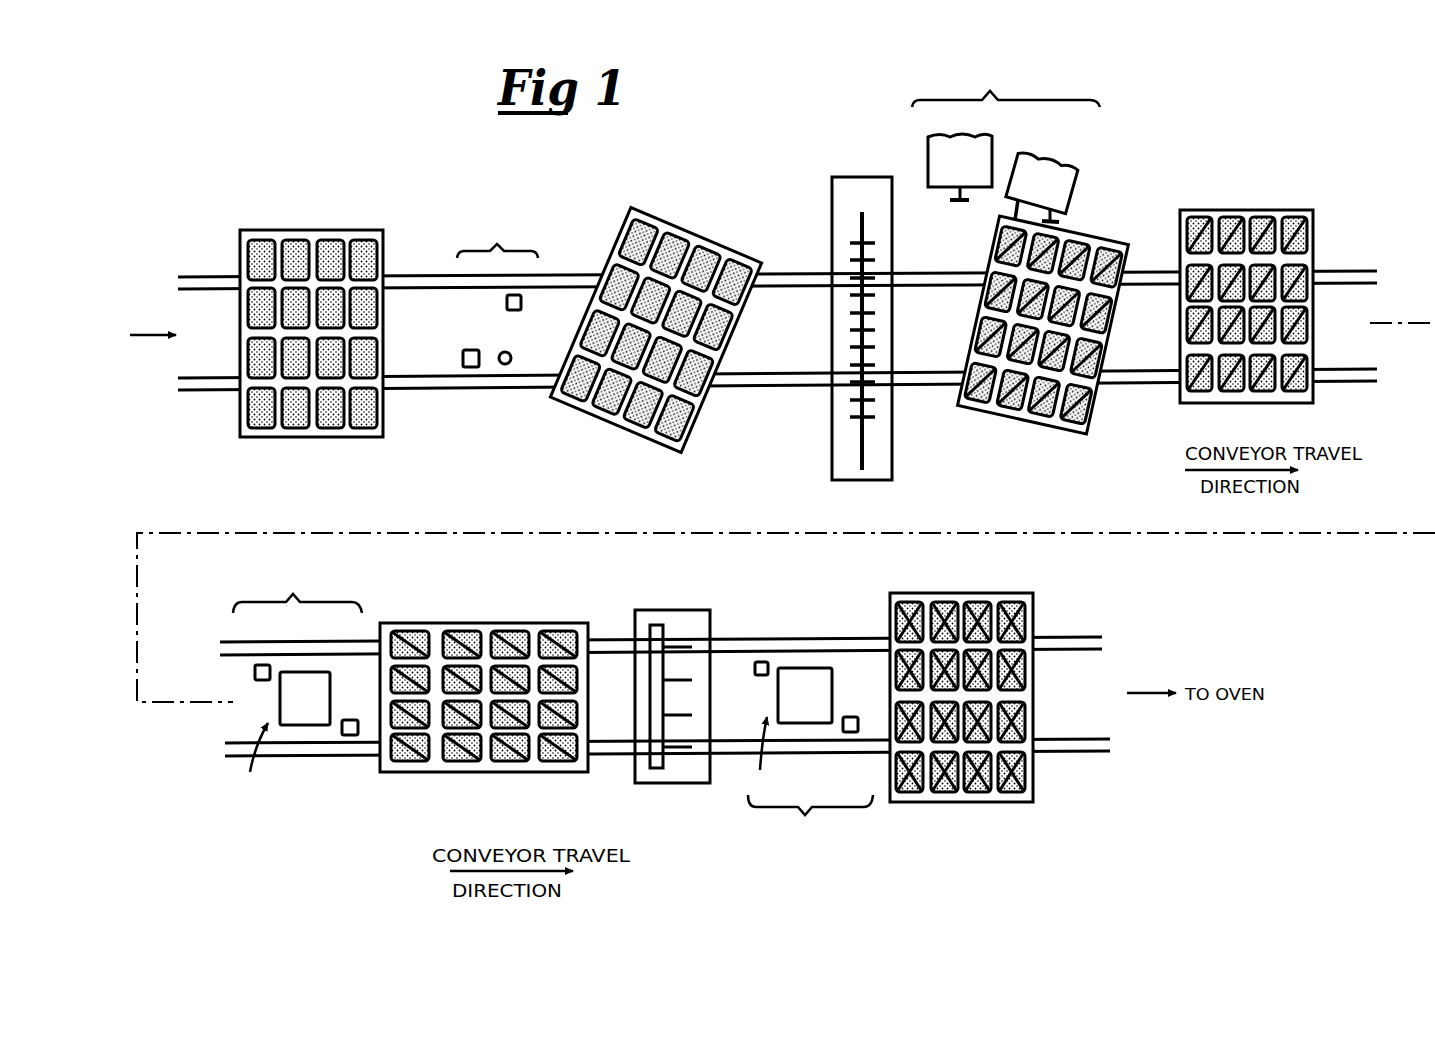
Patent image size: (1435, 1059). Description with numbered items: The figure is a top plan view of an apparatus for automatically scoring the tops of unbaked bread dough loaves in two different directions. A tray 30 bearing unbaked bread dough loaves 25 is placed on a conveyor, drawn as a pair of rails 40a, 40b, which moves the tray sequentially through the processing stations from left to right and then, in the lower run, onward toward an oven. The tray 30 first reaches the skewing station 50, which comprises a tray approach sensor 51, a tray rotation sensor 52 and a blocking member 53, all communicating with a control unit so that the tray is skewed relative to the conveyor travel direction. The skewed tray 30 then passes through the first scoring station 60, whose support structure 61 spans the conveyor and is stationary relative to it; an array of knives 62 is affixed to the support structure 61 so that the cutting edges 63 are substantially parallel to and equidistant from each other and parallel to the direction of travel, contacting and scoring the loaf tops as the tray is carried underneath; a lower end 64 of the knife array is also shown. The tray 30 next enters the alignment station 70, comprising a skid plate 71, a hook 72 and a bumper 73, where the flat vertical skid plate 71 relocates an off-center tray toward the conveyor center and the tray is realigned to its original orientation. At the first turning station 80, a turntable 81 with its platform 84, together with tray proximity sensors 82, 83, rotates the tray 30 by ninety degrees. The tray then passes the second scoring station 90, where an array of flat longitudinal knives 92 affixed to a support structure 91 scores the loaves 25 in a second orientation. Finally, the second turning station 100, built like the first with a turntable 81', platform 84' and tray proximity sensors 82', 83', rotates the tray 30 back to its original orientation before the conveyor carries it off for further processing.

The unbaked bread dough loaves 25 is at (262, 242).
The tray 30 is at (776, 488).
The conveyor 40a is at (418, 276).
The conveyor 40b is at (418, 392).
The skewing station 50 is at (476, 290).
The tray approach sensor 51 is at (463, 355).
The tray rotation sensor 52 is at (507, 302).
The blocking member 53 is at (507, 352).
The first scoring station 60 is at (870, 327).
The support structure 61 is at (861, 178).
The array of knives 62 is at (863, 247).
The cutting edges 63 is at (869, 414).
The shaft lower end 64 is at (866, 462).
The alignment station 70 is at (1012, 143).
The skid plate 71 is at (956, 202).
The hook 72 is at (1010, 213).
The bumper 73 is at (1060, 220).
The first turning station 80 is at (278, 681).
The turntable 81 is at (307, 736).
The tray proximity sensor 82 is at (230, 678).
The tray proximity sensor 83 is at (349, 704).
The platform 84 is at (247, 759).
The second scoring station 90 is at (689, 700).
The support structure 91 is at (650, 610).
The array of knives 92 is at (682, 645).
The second turning station 100 is at (796, 753).
The turntable 81' is at (819, 730).
The tray proximity sensor 82' is at (741, 684).
The tray proximity sensor 83' is at (857, 700).
The platform 84' is at (757, 753).